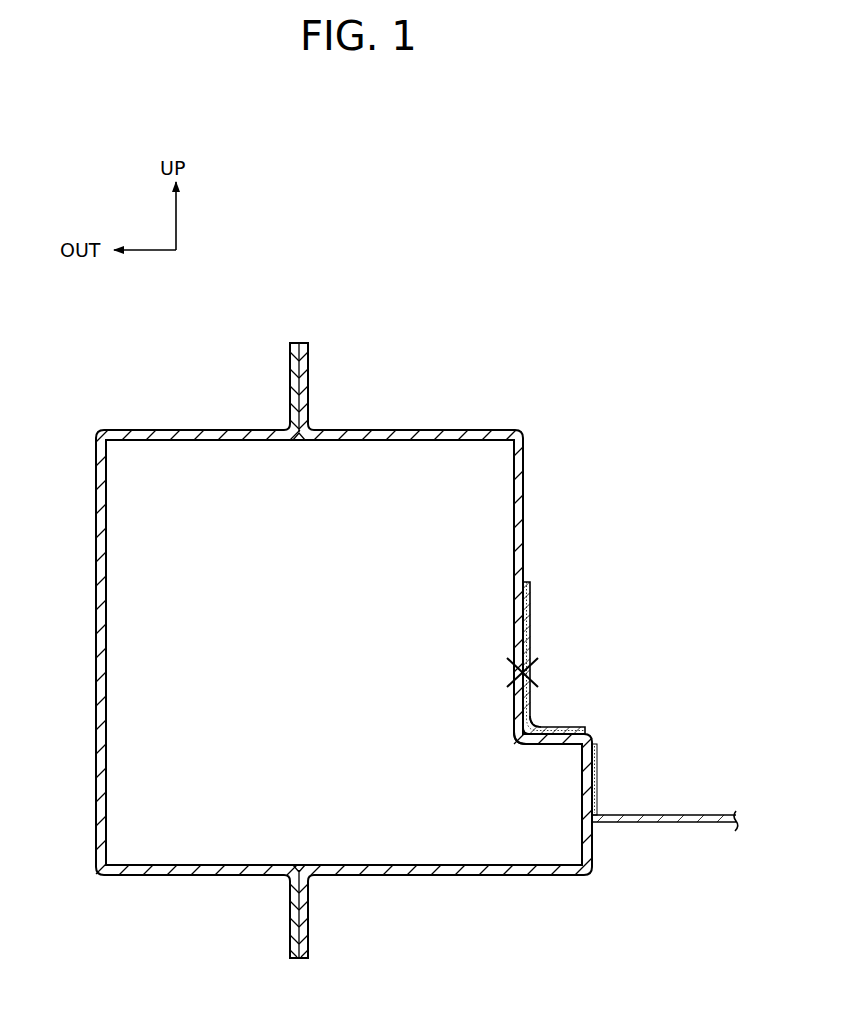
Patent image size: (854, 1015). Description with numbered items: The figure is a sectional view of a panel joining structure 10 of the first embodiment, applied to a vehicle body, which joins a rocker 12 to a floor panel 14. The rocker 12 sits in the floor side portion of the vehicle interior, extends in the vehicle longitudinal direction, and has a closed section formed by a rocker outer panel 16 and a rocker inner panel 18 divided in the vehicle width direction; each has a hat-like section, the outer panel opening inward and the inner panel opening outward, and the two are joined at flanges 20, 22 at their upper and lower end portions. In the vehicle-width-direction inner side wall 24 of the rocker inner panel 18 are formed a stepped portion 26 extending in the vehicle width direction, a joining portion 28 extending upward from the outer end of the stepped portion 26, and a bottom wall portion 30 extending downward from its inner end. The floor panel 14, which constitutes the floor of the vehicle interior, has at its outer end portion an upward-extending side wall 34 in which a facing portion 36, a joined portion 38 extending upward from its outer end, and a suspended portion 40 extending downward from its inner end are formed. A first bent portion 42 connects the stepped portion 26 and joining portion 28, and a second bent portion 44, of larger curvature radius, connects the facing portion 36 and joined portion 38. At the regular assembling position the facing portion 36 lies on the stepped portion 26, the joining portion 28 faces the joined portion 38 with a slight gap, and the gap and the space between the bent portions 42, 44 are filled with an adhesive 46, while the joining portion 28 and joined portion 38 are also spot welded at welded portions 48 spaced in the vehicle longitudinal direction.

The panel joining structure 10 is at (484, 248).
The rocker 12 is at (382, 272).
The floor panel 14 is at (693, 812).
The rocker outer panel 16 is at (229, 426).
The rocker inner panel 18 is at (371, 426).
The flange 20 is at (289, 370).
The flange 22 is at (309, 370).
The side wall 24 is at (510, 597).
The stepped portion 26 is at (537, 747).
The joining portion 28 is at (513, 648).
The bottom wall portion 30 is at (580, 795).
The side wall 34 is at (536, 597).
The facing portion 36 is at (557, 733).
The joined portion 38 is at (530, 648).
The suspended portion 40 is at (594, 790).
The first bent portion 42 is at (518, 740).
The second bent portion 44 is at (548, 718).
The adhesive 46 is at (520, 712).
The welded portion 48 is at (509, 681).